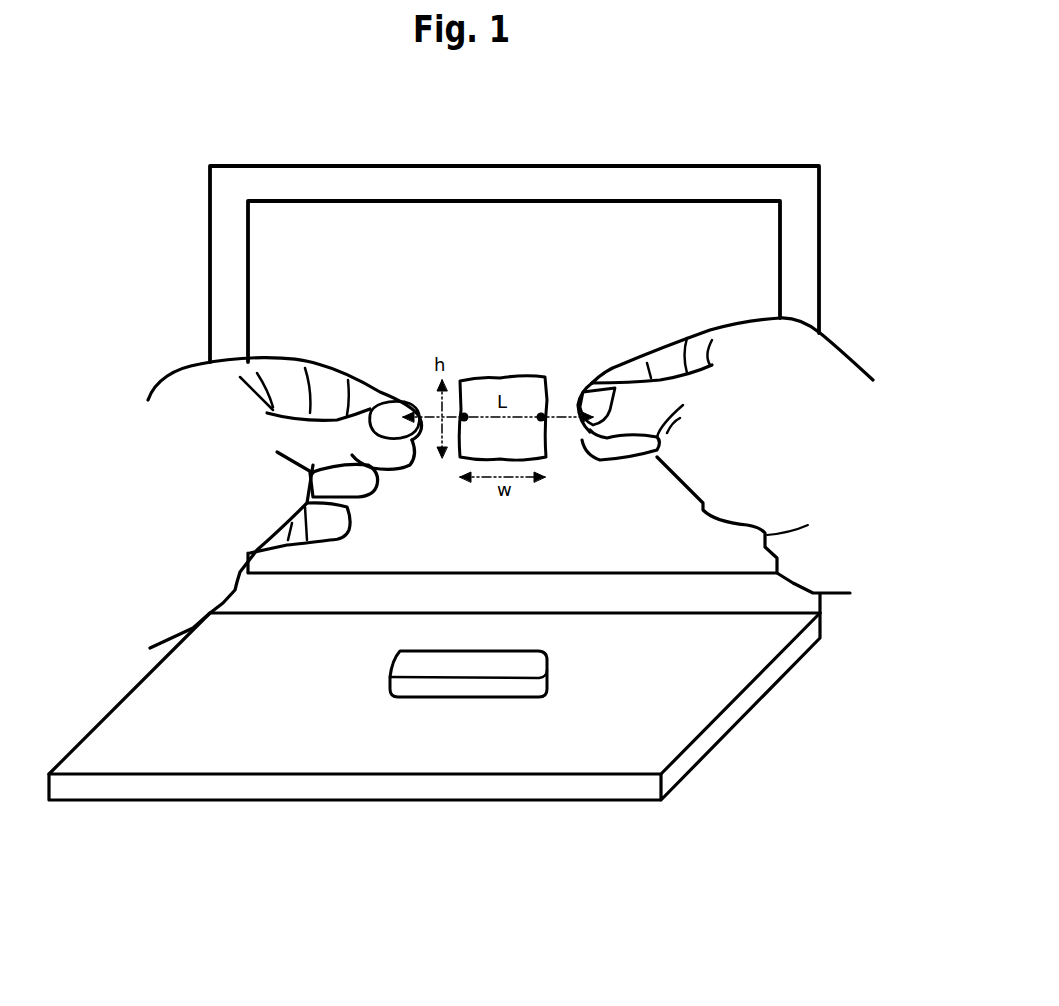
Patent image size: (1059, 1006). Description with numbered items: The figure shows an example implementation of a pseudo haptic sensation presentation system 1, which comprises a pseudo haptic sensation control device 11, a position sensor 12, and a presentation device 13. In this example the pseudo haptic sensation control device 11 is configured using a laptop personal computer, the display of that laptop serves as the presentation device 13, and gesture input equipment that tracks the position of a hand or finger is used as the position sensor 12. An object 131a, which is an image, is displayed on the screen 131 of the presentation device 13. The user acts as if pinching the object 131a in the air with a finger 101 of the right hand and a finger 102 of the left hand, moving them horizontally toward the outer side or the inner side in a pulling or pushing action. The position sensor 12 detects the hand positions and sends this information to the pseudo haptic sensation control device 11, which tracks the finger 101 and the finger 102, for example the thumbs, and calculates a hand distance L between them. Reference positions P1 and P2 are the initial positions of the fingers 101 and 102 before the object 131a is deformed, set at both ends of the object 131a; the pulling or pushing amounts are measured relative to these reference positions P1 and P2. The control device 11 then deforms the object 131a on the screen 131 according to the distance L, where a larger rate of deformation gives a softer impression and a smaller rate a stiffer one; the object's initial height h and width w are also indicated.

The pseudo haptic sensation presentation system 1 is at (229, 129).
The pseudo haptic sensation control device 11 is at (182, 785).
The position sensor 12 is at (497, 690).
The presentation device 13 is at (521, 182).
The screen 131 is at (615, 225).
The object 131a is at (532, 447).
The finger of the right hand 101 is at (620, 428).
The finger of the left hand 102 is at (385, 448).
The reference position P1 is at (541, 417).
The reference position P2 is at (464, 417).